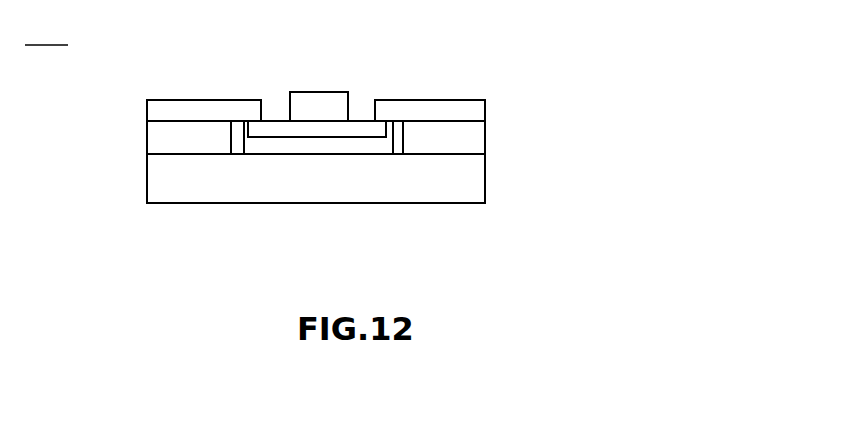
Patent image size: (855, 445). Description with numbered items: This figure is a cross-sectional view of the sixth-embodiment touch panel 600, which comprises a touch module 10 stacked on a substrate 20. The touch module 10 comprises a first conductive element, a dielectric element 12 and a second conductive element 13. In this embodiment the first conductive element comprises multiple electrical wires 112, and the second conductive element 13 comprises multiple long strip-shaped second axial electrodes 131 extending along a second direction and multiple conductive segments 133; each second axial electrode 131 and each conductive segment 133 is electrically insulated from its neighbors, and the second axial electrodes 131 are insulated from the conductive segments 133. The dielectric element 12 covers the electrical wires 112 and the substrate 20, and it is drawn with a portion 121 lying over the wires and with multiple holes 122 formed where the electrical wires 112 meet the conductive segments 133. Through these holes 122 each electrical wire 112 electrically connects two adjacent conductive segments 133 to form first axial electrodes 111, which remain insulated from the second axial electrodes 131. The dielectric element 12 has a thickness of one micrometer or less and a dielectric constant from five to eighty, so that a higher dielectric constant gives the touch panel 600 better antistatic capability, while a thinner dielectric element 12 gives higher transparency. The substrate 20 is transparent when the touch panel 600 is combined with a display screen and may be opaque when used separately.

The touch panel 600 is at (48, 33).
The touch module 10 is at (636, 35).
The first axial electrodes 111 is at (564, 82).
The conductive segments 133 is at (479, 110).
The electrical wires 112 is at (377, 142).
The dielectric element 12 is at (494, 142).
The upper sublayer of second layer 121 is at (360, 127).
The holes 122 is at (406, 144).
The second conductive element 13 is at (313, 97).
The second axial electrodes 131 is at (319, 106).
The substrate 20 is at (485, 187).